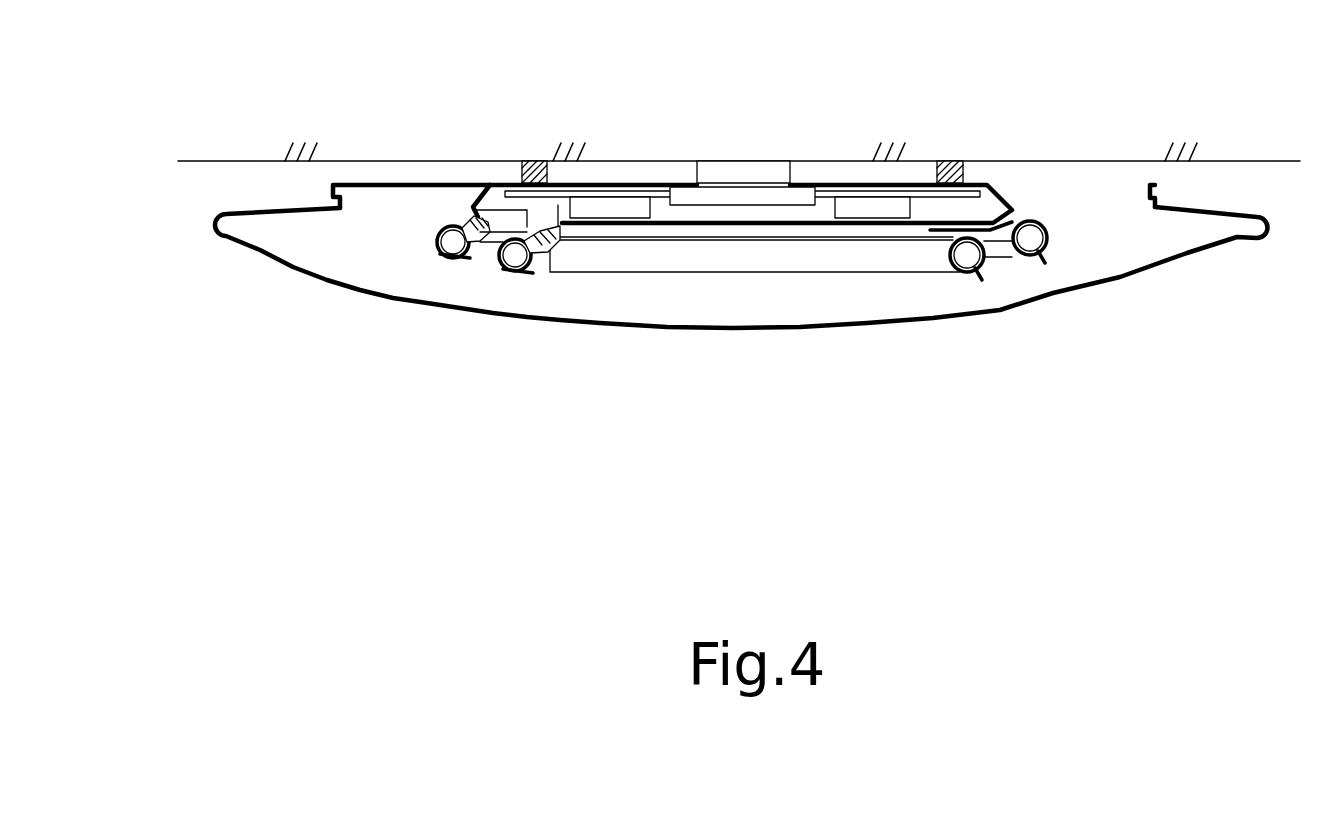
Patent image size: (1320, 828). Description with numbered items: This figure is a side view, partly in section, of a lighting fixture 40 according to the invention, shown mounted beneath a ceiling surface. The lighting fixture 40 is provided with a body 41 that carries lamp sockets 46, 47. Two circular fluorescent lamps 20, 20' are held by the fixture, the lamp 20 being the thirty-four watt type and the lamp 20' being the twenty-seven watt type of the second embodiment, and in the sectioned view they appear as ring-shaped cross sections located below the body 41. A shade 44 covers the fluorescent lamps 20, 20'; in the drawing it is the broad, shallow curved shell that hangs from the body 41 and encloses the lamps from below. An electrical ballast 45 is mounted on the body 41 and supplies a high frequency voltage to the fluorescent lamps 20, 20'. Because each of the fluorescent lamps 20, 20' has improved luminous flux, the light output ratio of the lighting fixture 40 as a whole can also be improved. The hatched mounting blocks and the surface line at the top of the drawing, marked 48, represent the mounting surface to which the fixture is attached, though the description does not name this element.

The circular fluorescent lamp 20 is at (988, 315).
The circular fluorescent lamp 20' is at (781, 330).
The lighting fixture 40 is at (747, 367).
The body 41 is at (922, 182).
The shade 44 is at (388, 293).
The electrical ballast 45 is at (845, 207).
The lamp socket 46 is at (480, 255).
The lamp socket 47 is at (543, 247).
The surface to be cleaned 48 is at (270, 163).